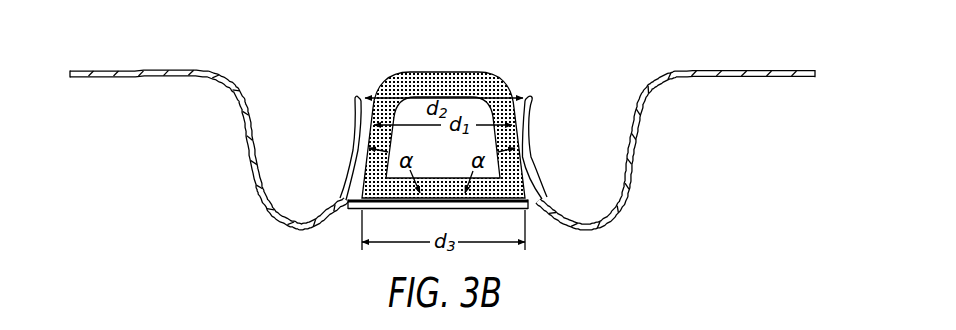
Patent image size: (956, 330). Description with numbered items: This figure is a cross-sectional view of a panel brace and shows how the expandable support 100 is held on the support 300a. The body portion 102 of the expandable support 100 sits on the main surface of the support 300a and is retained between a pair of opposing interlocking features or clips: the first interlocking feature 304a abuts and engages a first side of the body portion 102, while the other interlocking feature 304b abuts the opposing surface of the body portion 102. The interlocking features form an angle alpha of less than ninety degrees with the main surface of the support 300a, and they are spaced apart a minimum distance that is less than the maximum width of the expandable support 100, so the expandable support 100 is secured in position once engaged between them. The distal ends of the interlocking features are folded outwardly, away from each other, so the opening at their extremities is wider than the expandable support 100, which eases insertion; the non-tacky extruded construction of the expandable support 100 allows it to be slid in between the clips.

The expandable support 100 is at (397, 83).
The body portion 102 is at (524, 176).
The support 300a is at (762, 68).
The first interlocking feature 304a is at (527, 113).
The interlocking feature 304b is at (356, 134).